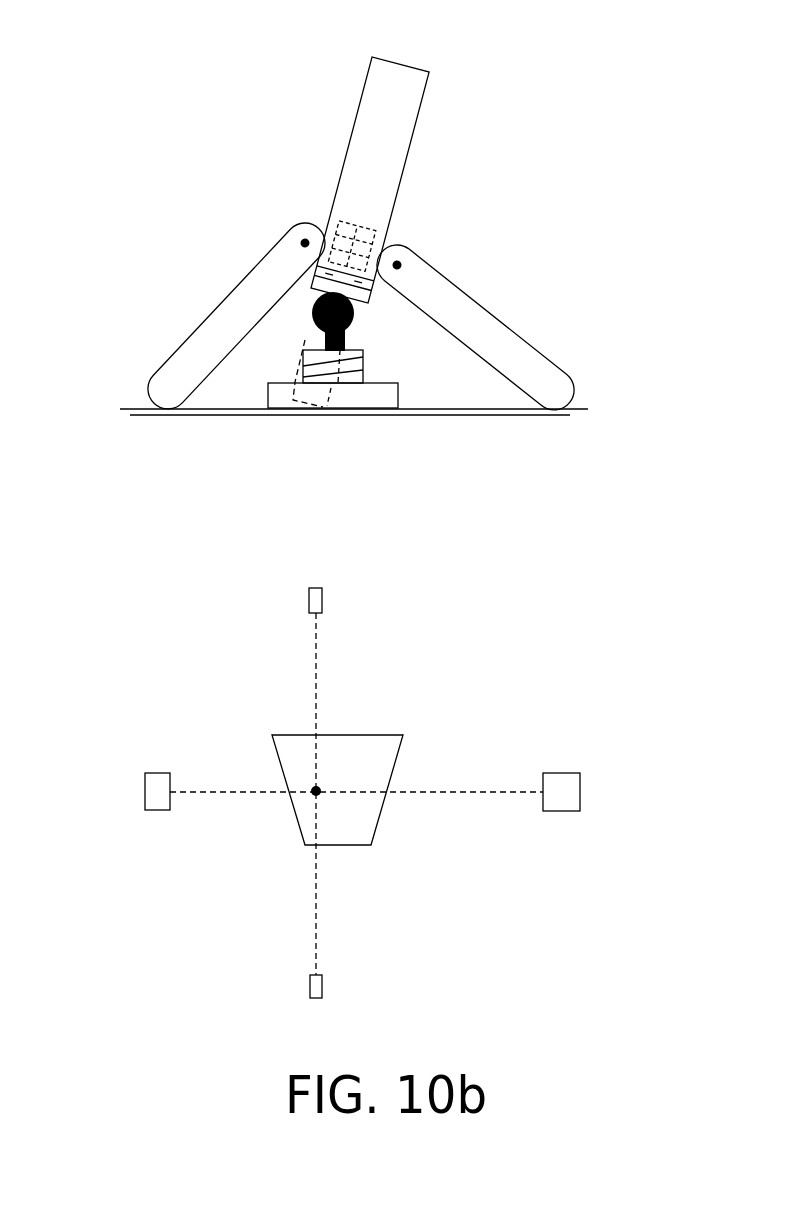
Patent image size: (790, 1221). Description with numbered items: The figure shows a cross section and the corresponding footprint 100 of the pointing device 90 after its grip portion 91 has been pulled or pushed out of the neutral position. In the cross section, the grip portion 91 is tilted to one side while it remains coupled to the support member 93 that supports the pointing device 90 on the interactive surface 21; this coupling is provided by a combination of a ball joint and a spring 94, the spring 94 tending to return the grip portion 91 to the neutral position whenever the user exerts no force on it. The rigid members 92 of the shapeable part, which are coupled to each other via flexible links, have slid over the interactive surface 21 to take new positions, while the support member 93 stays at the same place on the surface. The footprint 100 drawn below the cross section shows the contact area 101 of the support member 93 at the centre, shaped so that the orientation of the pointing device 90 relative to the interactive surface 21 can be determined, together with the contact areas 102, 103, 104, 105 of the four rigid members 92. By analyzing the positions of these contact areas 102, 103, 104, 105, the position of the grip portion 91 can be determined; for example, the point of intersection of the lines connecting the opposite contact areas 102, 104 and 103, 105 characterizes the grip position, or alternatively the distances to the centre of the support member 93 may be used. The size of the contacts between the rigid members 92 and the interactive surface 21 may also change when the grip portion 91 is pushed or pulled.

The pointing device 90 is at (186, 98).
The grip portion 91 is at (415, 128).
The rigid members 92 is at (228, 292).
The support member 93 is at (368, 400).
The spring 94 is at (358, 327).
The interactive surface 21 is at (465, 416).
The footprint 100 is at (205, 650).
The contact area 101 is at (382, 735).
The contact area 102 is at (322, 595).
The contact area 103 is at (580, 793).
The contact area 104 is at (323, 985).
The contact area 105 is at (145, 793).